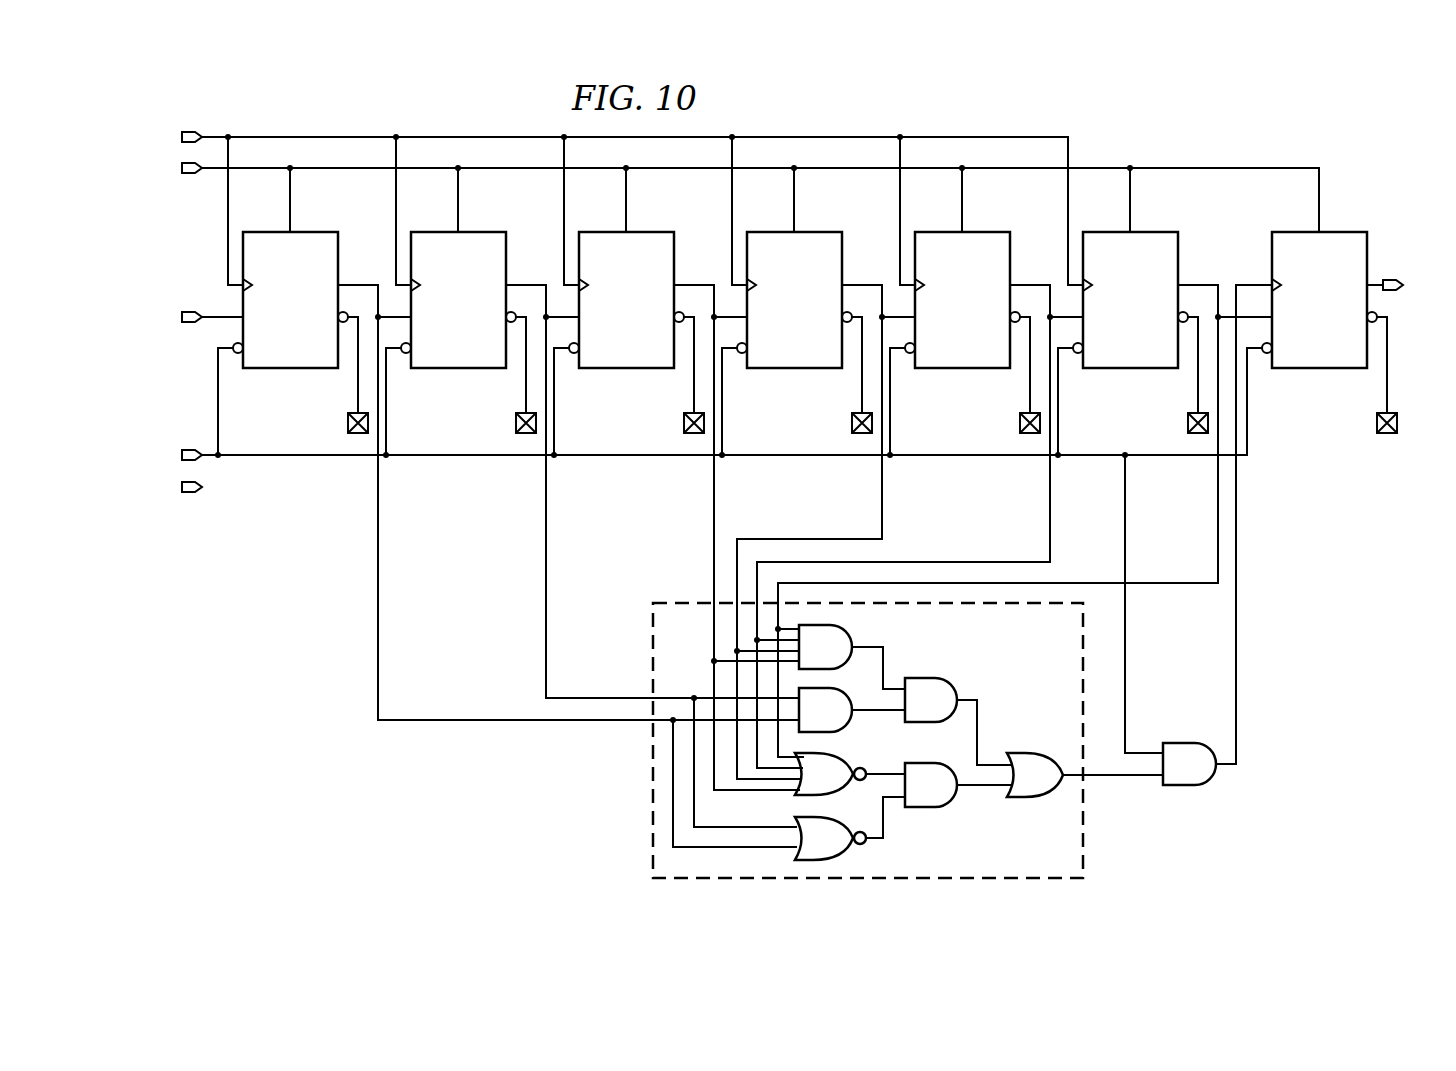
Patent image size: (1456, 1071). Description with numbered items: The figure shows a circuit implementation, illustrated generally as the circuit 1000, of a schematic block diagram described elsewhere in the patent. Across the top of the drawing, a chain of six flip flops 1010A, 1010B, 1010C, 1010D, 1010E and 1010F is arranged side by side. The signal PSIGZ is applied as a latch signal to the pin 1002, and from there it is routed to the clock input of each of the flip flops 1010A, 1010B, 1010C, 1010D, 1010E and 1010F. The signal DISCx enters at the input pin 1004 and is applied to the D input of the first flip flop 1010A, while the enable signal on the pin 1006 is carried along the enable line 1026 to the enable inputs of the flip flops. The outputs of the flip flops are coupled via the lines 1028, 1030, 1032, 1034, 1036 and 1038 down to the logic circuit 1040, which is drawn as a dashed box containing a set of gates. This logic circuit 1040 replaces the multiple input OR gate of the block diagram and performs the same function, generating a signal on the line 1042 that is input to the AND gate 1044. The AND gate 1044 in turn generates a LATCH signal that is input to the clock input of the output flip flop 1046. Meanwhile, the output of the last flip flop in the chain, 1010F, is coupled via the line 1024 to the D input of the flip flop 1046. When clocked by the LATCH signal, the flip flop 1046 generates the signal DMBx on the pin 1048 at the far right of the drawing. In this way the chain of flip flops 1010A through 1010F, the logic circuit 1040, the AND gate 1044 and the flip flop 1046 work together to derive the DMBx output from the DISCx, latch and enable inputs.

The circuit 1000 is at (1174, 126).
The pin 1002 is at (184, 131).
The DISCx input 1004 is at (184, 311).
The pin 1006 is at (184, 449).
The flip flop 1010A is at (323, 232).
The flip flop 1010B is at (491, 232).
The flip flop 1010C is at (659, 232).
The flip flop 1010D is at (827, 232).
The flip flop 1010E is at (995, 232).
The flip flop 1010F is at (1163, 232).
The line 1024 is at (1203, 284).
The enable line 1026 is at (300, 458).
The line 1028 is at (378, 570).
The line 1030 is at (546, 534).
The line 1032 is at (714, 506).
The line 1034 is at (882, 486).
The line 1036 is at (1050, 508).
The line 1038 is at (1218, 520).
The logic circuit 1040 is at (653, 812).
The line 1042 is at (1113, 778).
The AND gate 1044 is at (1183, 787).
The flip flop 1046 is at (1350, 232).
The pin 1048 is at (1390, 281).